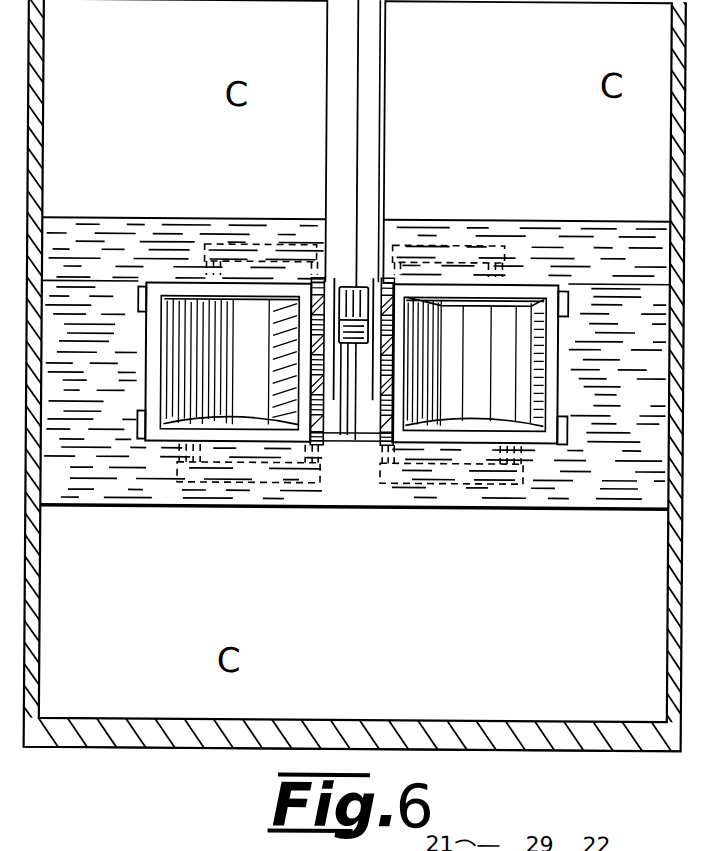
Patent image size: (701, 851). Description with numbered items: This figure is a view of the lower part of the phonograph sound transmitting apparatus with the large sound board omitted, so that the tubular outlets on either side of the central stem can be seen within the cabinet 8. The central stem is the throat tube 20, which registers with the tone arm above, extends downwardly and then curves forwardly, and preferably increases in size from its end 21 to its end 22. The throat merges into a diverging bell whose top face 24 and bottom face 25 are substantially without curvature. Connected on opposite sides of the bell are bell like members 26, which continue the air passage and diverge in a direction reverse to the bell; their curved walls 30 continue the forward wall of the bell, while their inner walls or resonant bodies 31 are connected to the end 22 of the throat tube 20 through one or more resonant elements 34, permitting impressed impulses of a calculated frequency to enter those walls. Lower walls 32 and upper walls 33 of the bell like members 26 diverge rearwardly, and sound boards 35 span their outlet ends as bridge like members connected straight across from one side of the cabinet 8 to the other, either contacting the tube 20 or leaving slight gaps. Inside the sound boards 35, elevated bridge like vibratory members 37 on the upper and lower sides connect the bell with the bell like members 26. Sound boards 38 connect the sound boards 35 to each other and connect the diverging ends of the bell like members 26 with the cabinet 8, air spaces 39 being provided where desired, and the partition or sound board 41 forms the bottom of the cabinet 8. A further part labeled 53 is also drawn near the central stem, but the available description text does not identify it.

The cabinet 8 is at (40, 580).
The throat tube 20 is at (367, 128).
The end of the throat 21 is at (370, 30).
The end of the throat 22 is at (325, 335).
The top face 24 is at (386, 290).
The bottom face 25 is at (355, 345).
The bell like members 26 is at (353, 361).
The walls 30 is at (153, 377).
The inner walls 31 is at (286, 378).
The lower walls 32 is at (173, 442).
The upper walls 33 is at (178, 284).
The resonant elements 34 is at (314, 300).
The sound boards 35 is at (548, 245).
The bridge like vibratory members 37 is at (238, 247).
The sound boards 38 is at (608, 397).
The air spaces 39 is at (140, 284).
The partition or sound board 41 is at (493, 735).
The stem 53 is at (358, 290).